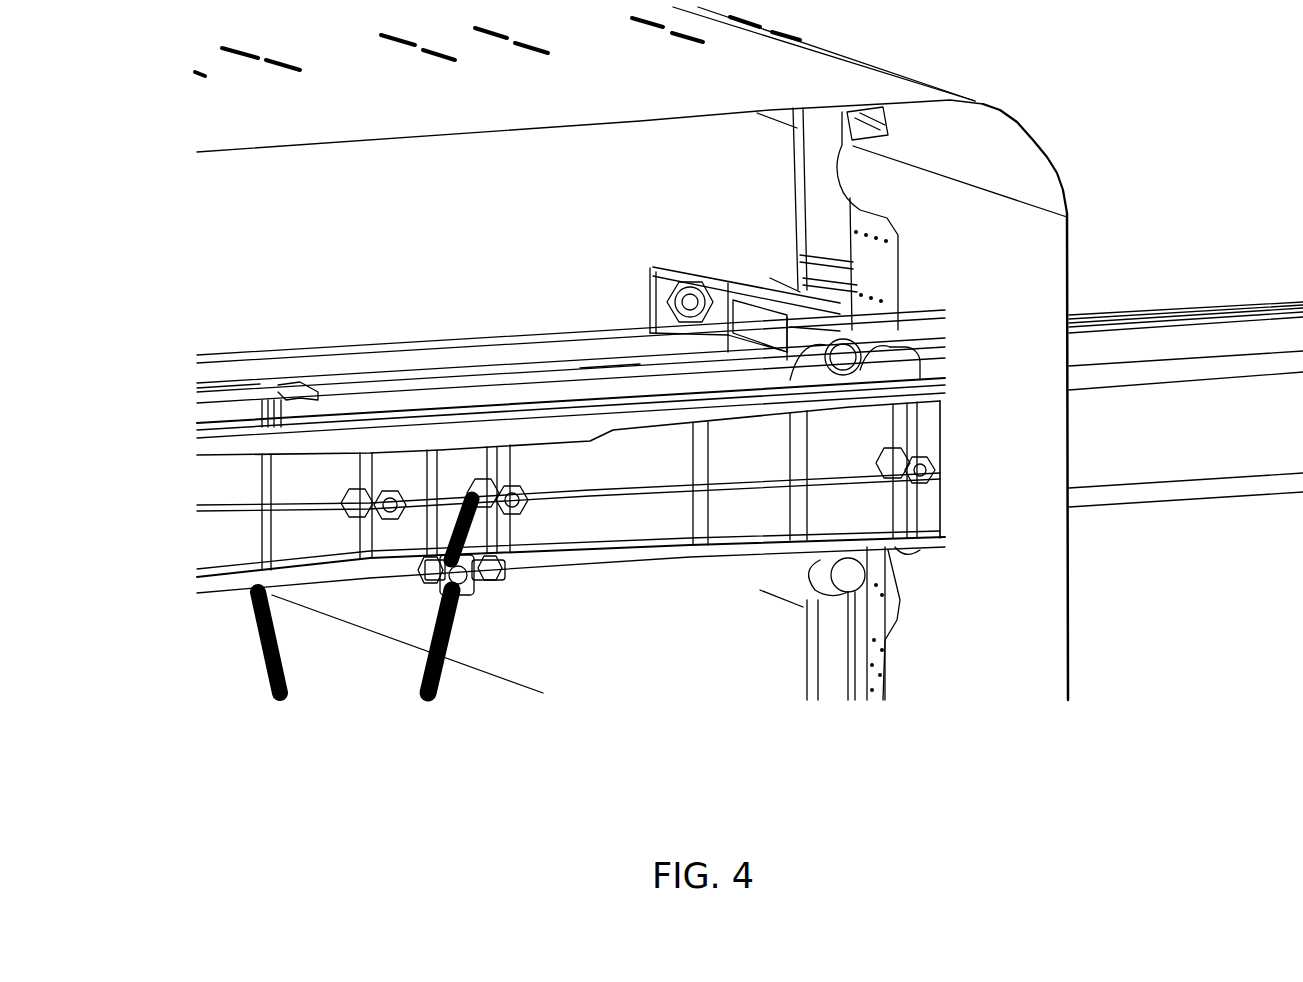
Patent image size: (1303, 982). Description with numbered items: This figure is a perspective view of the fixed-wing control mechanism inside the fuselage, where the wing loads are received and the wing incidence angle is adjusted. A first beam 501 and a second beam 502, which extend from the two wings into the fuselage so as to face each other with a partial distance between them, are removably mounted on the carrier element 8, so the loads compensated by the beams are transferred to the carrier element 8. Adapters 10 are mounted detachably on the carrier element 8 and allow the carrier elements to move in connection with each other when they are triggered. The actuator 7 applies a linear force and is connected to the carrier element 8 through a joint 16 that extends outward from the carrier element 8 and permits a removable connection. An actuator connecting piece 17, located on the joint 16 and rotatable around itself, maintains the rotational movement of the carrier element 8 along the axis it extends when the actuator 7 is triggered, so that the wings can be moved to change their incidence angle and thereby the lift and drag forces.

The actuator 7 is at (430, 637).
The carrier element 8 is at (668, 406).
The adapter 10 is at (735, 277).
The joint 16 is at (490, 565).
The actuator connecting piece 17 is at (510, 577).
The first beam 501 is at (227, 387).
The second beam 502 is at (612, 367).